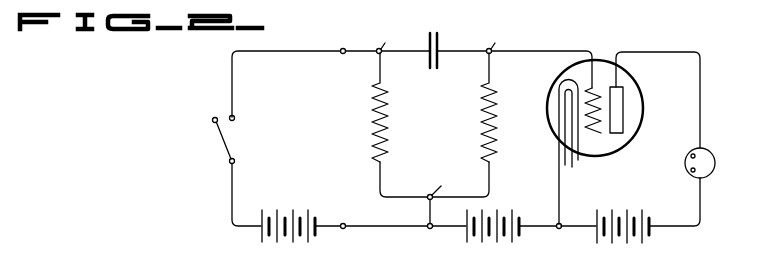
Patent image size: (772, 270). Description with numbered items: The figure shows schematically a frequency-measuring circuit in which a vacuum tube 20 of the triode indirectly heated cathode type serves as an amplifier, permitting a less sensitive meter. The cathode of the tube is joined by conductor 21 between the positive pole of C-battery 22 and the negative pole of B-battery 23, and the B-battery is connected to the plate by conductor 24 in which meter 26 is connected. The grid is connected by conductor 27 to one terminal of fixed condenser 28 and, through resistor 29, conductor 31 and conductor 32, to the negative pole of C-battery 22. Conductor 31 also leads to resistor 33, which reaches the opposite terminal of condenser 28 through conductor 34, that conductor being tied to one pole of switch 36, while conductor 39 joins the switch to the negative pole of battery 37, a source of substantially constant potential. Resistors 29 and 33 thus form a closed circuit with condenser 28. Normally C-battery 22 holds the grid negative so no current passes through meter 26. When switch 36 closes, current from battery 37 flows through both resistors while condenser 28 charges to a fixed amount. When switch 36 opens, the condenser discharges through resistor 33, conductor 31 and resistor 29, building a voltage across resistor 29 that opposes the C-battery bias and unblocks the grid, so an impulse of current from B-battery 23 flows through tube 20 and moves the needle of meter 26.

The vacuum tube 20 is at (628, 146).
The conductor 21 is at (561, 192).
The C-battery 22 is at (502, 243).
The B-battery 23 is at (633, 243).
The conductor 24 is at (693, 118).
The meter 26 is at (716, 167).
The conductor 27 is at (459, 42).
The fixed condenser 28 is at (430, 73).
The resistor 29 is at (496, 153).
The conductor 31 is at (408, 195).
The conductor 32 is at (428, 213).
The resistor 33 is at (372, 152).
The conductor 34 is at (232, 95).
The switch 36 is at (219, 138).
The battery 37 is at (282, 207).
The conductor 39 is at (230, 221).